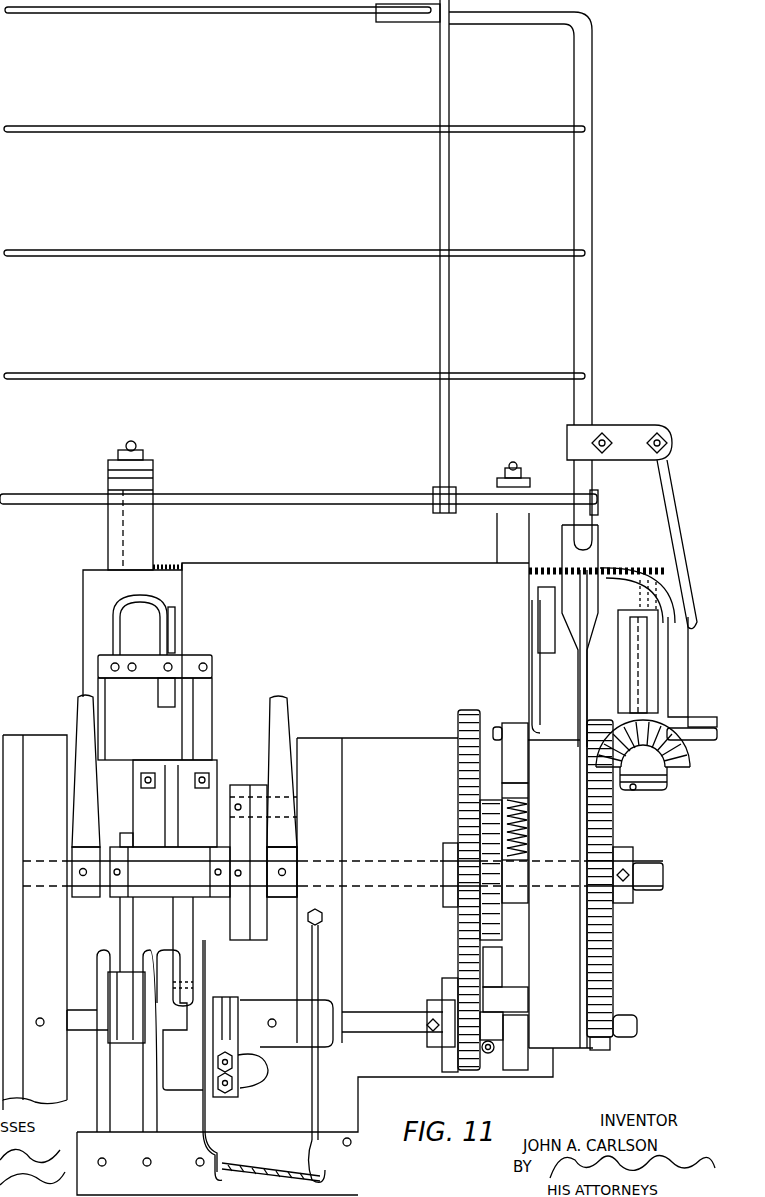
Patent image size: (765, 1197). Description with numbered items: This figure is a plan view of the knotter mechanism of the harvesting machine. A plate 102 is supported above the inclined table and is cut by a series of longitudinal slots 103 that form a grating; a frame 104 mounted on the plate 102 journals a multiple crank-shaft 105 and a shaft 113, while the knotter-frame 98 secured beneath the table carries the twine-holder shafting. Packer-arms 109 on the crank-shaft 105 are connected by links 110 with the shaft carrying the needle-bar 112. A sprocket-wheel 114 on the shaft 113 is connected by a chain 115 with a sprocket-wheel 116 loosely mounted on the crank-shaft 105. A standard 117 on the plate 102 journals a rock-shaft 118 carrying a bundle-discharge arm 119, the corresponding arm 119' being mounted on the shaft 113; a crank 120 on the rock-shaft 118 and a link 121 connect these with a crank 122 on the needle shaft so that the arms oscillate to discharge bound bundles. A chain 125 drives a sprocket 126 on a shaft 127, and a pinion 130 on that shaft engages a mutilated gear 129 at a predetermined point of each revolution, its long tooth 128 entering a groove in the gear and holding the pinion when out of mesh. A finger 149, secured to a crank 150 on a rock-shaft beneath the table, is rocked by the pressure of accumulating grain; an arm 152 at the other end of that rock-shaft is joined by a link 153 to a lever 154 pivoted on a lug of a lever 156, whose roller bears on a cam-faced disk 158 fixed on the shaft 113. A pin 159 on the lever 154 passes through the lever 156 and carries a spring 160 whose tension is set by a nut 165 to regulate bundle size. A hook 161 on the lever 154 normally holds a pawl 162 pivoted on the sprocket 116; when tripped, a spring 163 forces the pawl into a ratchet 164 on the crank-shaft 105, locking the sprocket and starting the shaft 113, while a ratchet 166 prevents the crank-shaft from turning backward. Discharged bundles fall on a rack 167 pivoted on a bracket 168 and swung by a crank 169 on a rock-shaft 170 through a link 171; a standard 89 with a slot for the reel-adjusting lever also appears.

The rack 167 is at (581, 309).
The link 171 is at (673, 543).
The bracket 168 is at (588, 560).
The chain 125 is at (621, 570).
The sprocket 126 is at (653, 587).
The shaft 127 is at (637, 665).
The crank 169 is at (674, 692).
The rock-shaft 170 is at (703, 727).
The pinion 130 is at (668, 745).
The long tooth 128 is at (651, 755).
The arm 152 is at (543, 632).
The link 153 is at (536, 690).
The sprocket-wheel 114 is at (473, 710).
The lever 154 is at (520, 727).
The chain 115 is at (463, 757).
The pivoted lever 156 is at (514, 790).
The spring 160 is at (534, 798).
The pin 159 is at (527, 823).
The nut 165 is at (527, 843).
The cam-faced disk 158 is at (500, 917).
The shaft 113 is at (390, 865).
The mutilated gear 129 is at (615, 940).
The pawl 162 is at (490, 980).
The frame 104 is at (353, 948).
The hook 161 is at (505, 1000).
The ratchet 164 is at (513, 1043).
The spring 163 is at (497, 1053).
The sprocket-wheel 116 is at (460, 1072).
The ratchet 166 is at (440, 1057).
The multiple crank-shaft 105 is at (368, 1012).
The knotter-frame 98 is at (138, 538).
The finger 149 is at (177, 615).
The crank 150 is at (178, 648).
The plate 102 is at (315, 879).
The bundle-discharge arm 119 is at (61, 796).
The bundle-discharge arm 119' is at (304, 794).
The crank 120 is at (237, 787).
The standard 117 is at (157, 762).
The link 121 is at (257, 853).
The rock-shaft 118 is at (165, 888).
The needle-bar 112 is at (190, 951).
The crank 122 is at (261, 1060).
The links 110 is at (125, 965).
The packer-arms 109 is at (118, 1022).
The longitudinal slots 103 is at (145, 1014).
The standard 89 is at (19, 1083).